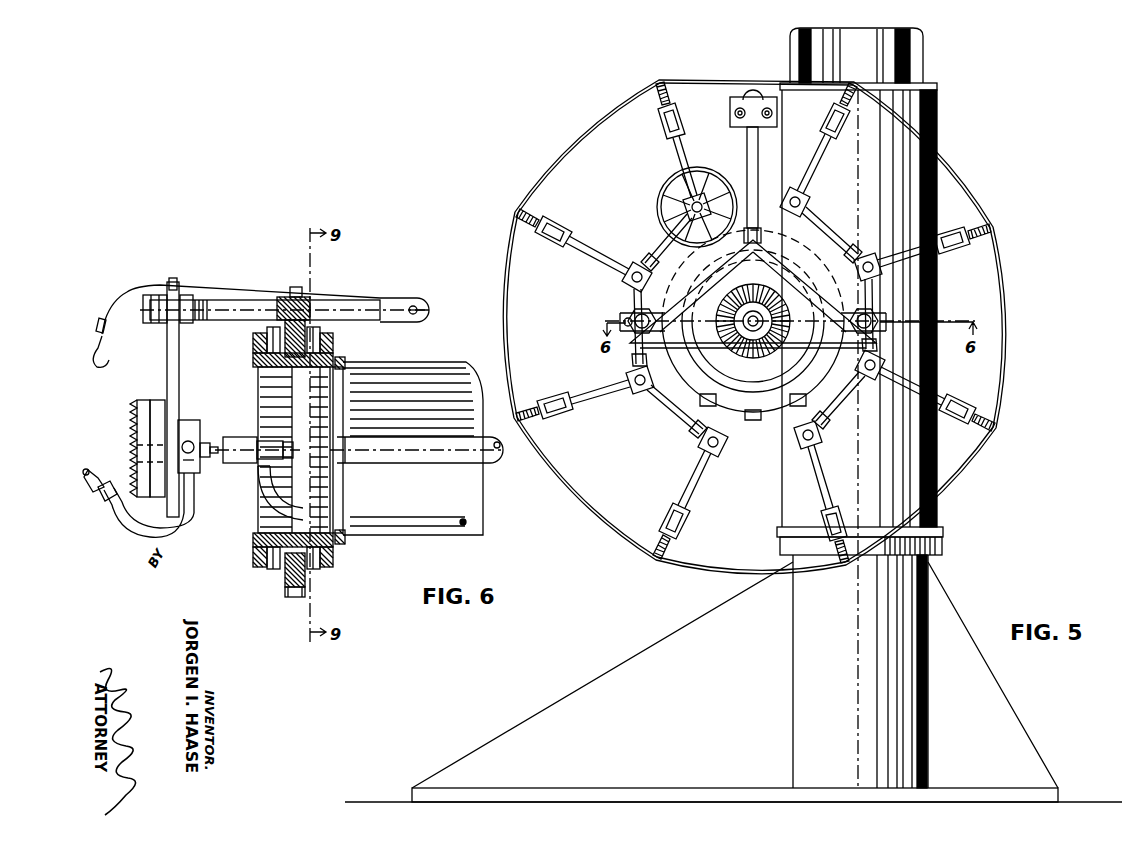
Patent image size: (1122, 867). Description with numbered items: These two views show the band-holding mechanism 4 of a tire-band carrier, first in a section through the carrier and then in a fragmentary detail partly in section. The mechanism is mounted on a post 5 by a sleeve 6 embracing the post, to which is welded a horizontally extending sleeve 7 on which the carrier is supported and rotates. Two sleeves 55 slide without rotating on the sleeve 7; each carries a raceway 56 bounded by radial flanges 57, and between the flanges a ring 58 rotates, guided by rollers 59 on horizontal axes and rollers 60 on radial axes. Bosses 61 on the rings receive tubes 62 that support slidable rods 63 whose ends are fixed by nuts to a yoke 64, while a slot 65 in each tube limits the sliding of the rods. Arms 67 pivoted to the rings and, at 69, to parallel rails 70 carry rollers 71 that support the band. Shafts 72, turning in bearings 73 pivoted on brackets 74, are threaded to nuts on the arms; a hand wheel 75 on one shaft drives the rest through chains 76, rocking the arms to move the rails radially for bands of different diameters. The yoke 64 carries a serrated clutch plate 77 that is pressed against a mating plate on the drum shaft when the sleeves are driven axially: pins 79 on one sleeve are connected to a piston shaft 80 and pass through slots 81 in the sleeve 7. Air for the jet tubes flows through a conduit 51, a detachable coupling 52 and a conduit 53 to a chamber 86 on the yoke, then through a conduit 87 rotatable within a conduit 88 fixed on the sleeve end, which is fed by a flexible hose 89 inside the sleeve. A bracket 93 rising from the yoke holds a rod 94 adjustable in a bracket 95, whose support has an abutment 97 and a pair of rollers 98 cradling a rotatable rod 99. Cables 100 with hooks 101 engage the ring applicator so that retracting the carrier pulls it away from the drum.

In FIG. 6, the band-holding mechanism 4 is at (468, 354).
In FIG. 5, the post 5 is at (918, 58).
In FIG. 5, the sleeve 6 is at (940, 520).
In FIG. 5, the sleeve 7 is at (724, 384).
In FIG. 6, the sleeve 7 is at (462, 413).
In FIG. 6, the air conduit 51 is at (83, 470).
In FIG. 6, the coupling means 52 is at (106, 484).
In FIG. 6, the conduit 53 is at (120, 528).
In FIG. 5, the sleeve 55 is at (763, 404).
In FIG. 6, the sleeve 55 is at (263, 500).
In FIG. 6, the raceway 56 is at (258, 378).
In FIG. 6, the radial flange 57 is at (254, 360).
In FIG. 6, the ring 58 is at (285, 297).
In FIG. 6, the roller 59 is at (267, 337).
In FIG. 6, the roller 60 is at (253, 345).
In FIG. 6, the boss 61 is at (302, 325).
In FIG. 6, the tube 62 is at (395, 298).
In FIG. 5, the rod 63 is at (626, 319).
In FIG. 6, the rod 63 is at (219, 298).
In FIG. 5, the yoke 64 is at (640, 306).
In FIG. 6, the yoke 64 is at (166, 345).
In FIG. 6, the slot 65 is at (420, 302).
In FIG. 5, the arm 67 is at (686, 163).
In FIG. 5, the pivot 69 is at (556, 243).
In FIG. 5, the rail 70 is at (662, 125).
In FIG. 5, the roller 71 is at (658, 84).
In FIG. 5, the shaft 72 is at (630, 276).
In FIG. 5, the bearing 73 is at (680, 203).
In FIG. 5, the bracket 74 is at (846, 396).
In FIG. 5, the hand wheel 75 is at (727, 184).
In FIG. 5, the chain 76 is at (652, 252).
In FIG. 5, the clutch plate 77 is at (754, 359).
In FIG. 6, the clutch plate 77 is at (127, 404).
In FIG. 6, the pin 79 is at (346, 362).
In FIG. 6, the piston shaft 80 is at (361, 465).
In FIG. 6, the slot 81 is at (426, 366).
In FIG. 6, the chamber 86 is at (194, 420).
In FIG. 6, the conduit 87 is at (205, 458).
In FIG. 6, the conduit 88 is at (240, 437).
In FIG. 6, the flexible hose 89 is at (466, 521).
In FIG. 5, the bracket 93 is at (783, 263).
In FIG. 5, the rod 94 is at (760, 150).
In FIG. 5, the bracket 95 is at (757, 237).
In FIG. 5, the abutment 97 is at (777, 112).
In FIG. 5, the roller 98 is at (730, 112).
In FIG. 5, the rod 99 is at (757, 92).
In FIG. 6, the cable 100 is at (129, 290).
In FIG. 6, the hook 101 is at (92, 325).